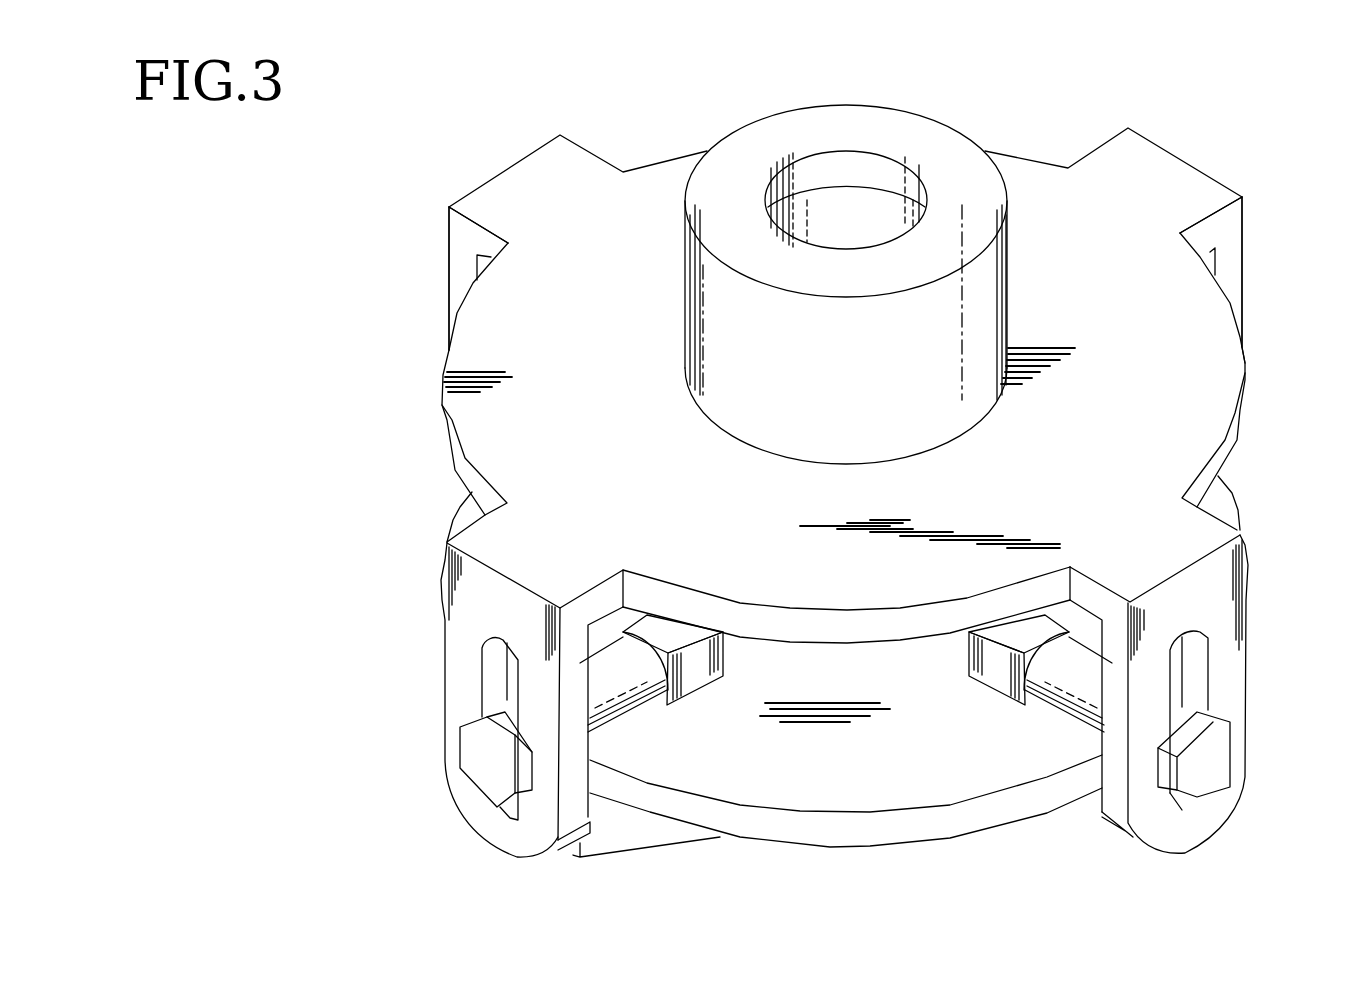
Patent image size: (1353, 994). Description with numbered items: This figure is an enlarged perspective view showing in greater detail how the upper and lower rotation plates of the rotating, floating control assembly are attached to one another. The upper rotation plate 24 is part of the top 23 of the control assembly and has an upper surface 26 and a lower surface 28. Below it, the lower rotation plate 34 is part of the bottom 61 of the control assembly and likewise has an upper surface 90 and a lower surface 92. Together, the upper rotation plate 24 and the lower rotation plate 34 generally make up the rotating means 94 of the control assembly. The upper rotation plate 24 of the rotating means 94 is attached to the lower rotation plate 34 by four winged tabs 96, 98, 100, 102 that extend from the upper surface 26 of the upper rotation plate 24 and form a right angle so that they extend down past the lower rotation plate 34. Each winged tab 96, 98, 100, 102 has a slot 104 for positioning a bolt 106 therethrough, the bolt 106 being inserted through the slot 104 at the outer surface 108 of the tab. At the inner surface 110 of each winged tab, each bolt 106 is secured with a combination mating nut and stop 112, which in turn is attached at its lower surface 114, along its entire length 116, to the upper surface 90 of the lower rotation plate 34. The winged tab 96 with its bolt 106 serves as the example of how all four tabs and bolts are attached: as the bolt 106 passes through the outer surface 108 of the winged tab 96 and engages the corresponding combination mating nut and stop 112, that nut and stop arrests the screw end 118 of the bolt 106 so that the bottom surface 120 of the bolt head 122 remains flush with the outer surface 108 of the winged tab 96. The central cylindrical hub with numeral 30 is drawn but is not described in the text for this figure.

The top 23 is at (846, 98).
The upper rotation plate 24 is at (1242, 410).
The upper surface 26 is at (1205, 433).
The lower surface 28 is at (1223, 480).
The cylindrical hub 30 is at (983, 328).
The lower rotation plate 34 is at (1007, 812).
The bottom 61 is at (790, 857).
The upper surface 90 is at (878, 800).
The lower surface 92 is at (950, 840).
The rotating means 94 is at (1230, 445).
The winged tab 96 is at (1243, 731).
The winged tab 98 is at (442, 717).
The winged tab 100 is at (449, 239).
The winged tab 102 is at (1242, 236).
The slot 104 is at (515, 687).
The bolt 106 is at (618, 723).
The outer surface 108 is at (468, 798).
The inner surface 110 is at (500, 668).
The combination mating nut and stop 112 is at (717, 643).
The lower surface 114 is at (732, 676).
The entire length 116 is at (667, 710).
The screw end 118 is at (628, 695).
The bottom surface 120 is at (533, 780).
The bolt head 122 is at (500, 783).